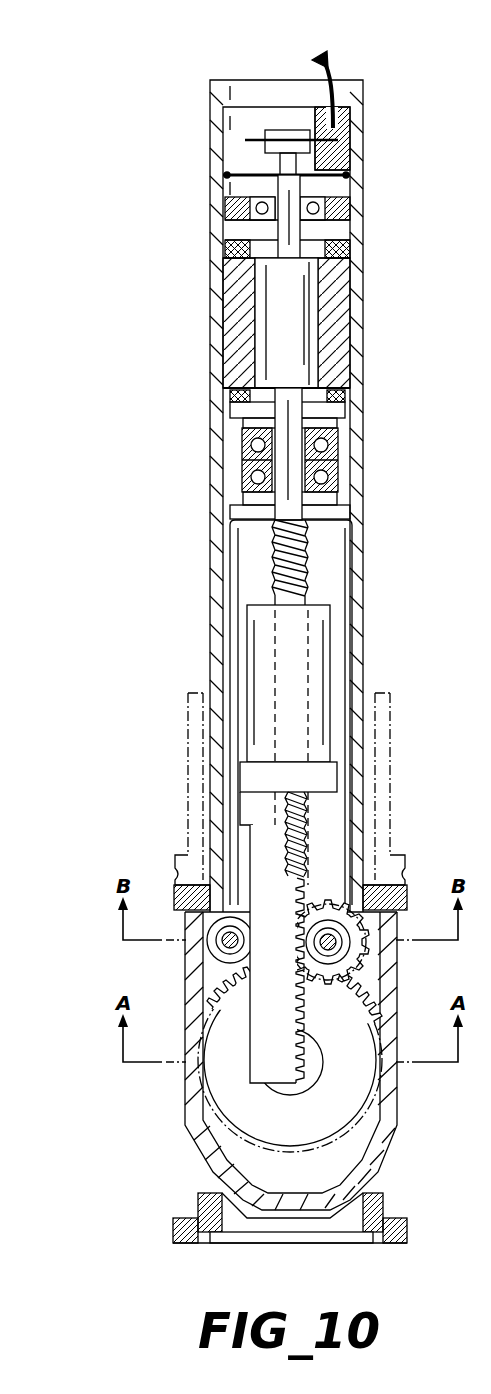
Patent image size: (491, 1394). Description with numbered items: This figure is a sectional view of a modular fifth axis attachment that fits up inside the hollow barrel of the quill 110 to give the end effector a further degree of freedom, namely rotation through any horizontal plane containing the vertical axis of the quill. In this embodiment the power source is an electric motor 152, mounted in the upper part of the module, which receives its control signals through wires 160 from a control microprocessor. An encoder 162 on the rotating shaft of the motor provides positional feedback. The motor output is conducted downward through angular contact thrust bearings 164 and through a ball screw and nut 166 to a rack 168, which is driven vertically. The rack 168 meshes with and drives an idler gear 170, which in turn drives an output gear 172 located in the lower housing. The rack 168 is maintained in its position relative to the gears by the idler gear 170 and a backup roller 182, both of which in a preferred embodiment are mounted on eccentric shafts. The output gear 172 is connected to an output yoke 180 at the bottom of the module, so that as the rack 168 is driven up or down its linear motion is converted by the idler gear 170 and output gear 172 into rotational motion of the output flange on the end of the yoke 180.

The outer sleeve 110 is at (188, 805).
The electric motor 152 is at (208, 383).
The wires 160 is at (362, 92).
The encoder 162 is at (245, 140).
The angular contact thrust bearings 164 is at (345, 459).
The ball screw and nut 166 is at (312, 714).
The rack 168 is at (268, 1040).
The idler gear 170 is at (350, 948).
The output gear 172 is at (320, 1078).
The output yoke 180 is at (200, 1198).
The backup roller 182 is at (212, 940).